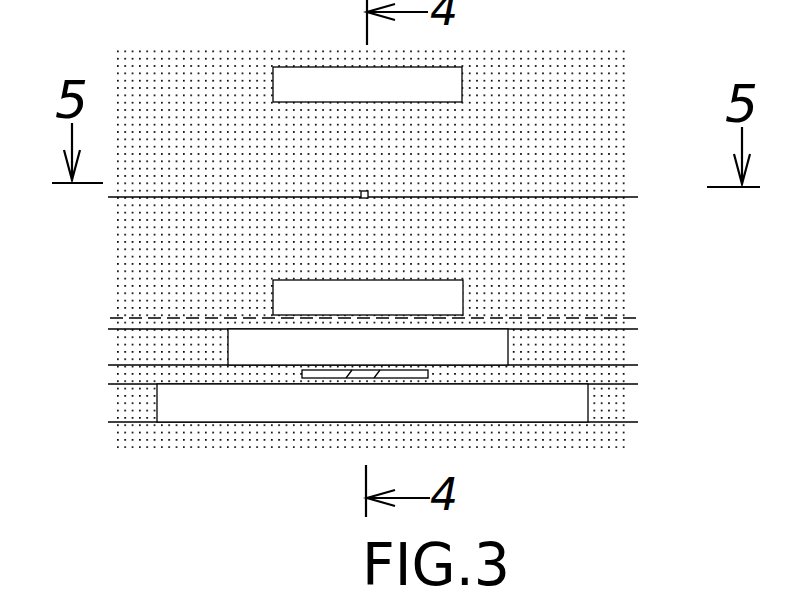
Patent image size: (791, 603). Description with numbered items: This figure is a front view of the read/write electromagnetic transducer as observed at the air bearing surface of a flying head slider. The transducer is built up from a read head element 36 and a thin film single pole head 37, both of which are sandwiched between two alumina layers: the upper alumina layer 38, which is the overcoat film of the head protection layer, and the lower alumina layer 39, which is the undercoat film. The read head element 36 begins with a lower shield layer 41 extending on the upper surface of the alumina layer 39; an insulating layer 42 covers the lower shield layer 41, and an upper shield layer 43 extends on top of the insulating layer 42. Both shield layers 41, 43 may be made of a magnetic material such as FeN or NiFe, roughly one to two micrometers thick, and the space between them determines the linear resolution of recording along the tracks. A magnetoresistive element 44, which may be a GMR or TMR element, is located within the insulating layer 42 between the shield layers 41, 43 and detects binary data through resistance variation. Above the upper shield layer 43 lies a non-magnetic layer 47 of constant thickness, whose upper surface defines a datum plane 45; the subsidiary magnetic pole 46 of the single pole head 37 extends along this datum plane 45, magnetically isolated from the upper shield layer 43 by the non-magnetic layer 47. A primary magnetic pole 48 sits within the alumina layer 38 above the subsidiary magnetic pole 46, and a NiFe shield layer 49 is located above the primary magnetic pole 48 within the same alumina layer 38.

The read head element 36 is at (281, 436).
The single pole head 37 is at (252, 102).
The alumina layer 38 is at (608, 198).
The alumina layer 39 is at (605, 423).
The lower shield layer 41 is at (157, 405).
The insulating layer 42 is at (605, 366).
The upper shield layer 43 is at (228, 343).
The magnetoresistive element 44 is at (358, 372).
The datum plane 45 is at (603, 318).
The subsidiary magnetic pole 46 is at (273, 291).
The non-magnetic layer 47 is at (145, 318).
The primary magnetic pole 48 is at (370, 195).
The shield layer 49 is at (463, 80).